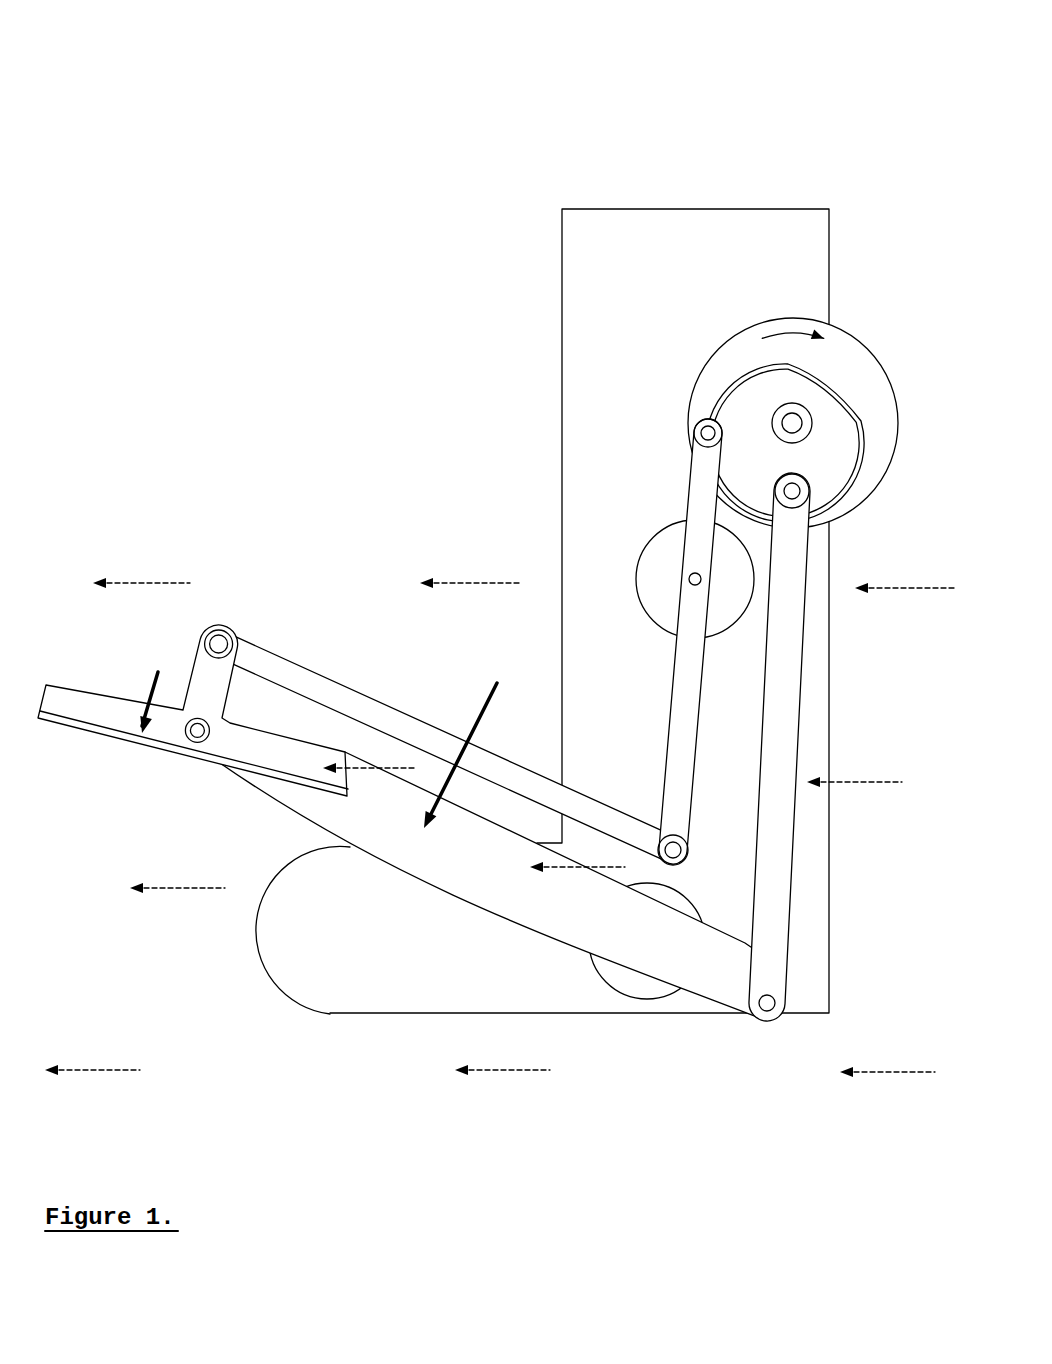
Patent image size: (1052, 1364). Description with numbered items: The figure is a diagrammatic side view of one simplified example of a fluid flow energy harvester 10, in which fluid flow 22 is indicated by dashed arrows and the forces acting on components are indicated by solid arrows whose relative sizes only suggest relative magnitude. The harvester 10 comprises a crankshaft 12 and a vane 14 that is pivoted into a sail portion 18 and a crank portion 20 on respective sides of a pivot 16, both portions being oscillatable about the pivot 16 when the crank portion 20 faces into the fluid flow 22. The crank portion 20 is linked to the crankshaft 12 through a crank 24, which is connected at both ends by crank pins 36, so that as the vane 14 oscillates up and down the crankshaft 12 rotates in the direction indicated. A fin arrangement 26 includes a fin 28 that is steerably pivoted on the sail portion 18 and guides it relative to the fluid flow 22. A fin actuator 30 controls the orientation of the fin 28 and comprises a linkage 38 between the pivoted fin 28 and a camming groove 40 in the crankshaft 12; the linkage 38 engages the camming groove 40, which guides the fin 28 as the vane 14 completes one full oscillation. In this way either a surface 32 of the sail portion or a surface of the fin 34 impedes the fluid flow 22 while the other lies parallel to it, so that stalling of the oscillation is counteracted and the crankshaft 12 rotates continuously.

The fluid flow energy harvester 10 is at (190, 157).
The crankshaft 12 is at (778, 323).
The vane 14 is at (375, 847).
The pivot 16 is at (647, 942).
The sail portion 18 is at (331, 905).
The crank portion 20 is at (677, 1018).
The fluid flow 22 is at (862, 783).
The crank 24 is at (780, 673).
The fin arrangement 26 is at (258, 574).
The fin 28 is at (100, 732).
The fin actuator 30 is at (632, 472).
The surface of the sail portion 32 is at (400, 795).
The surface of the fin 34 is at (113, 717).
The crank pin 36 is at (792, 493).
The linkage 38 is at (680, 722).
The camming groove 40 is at (843, 402).